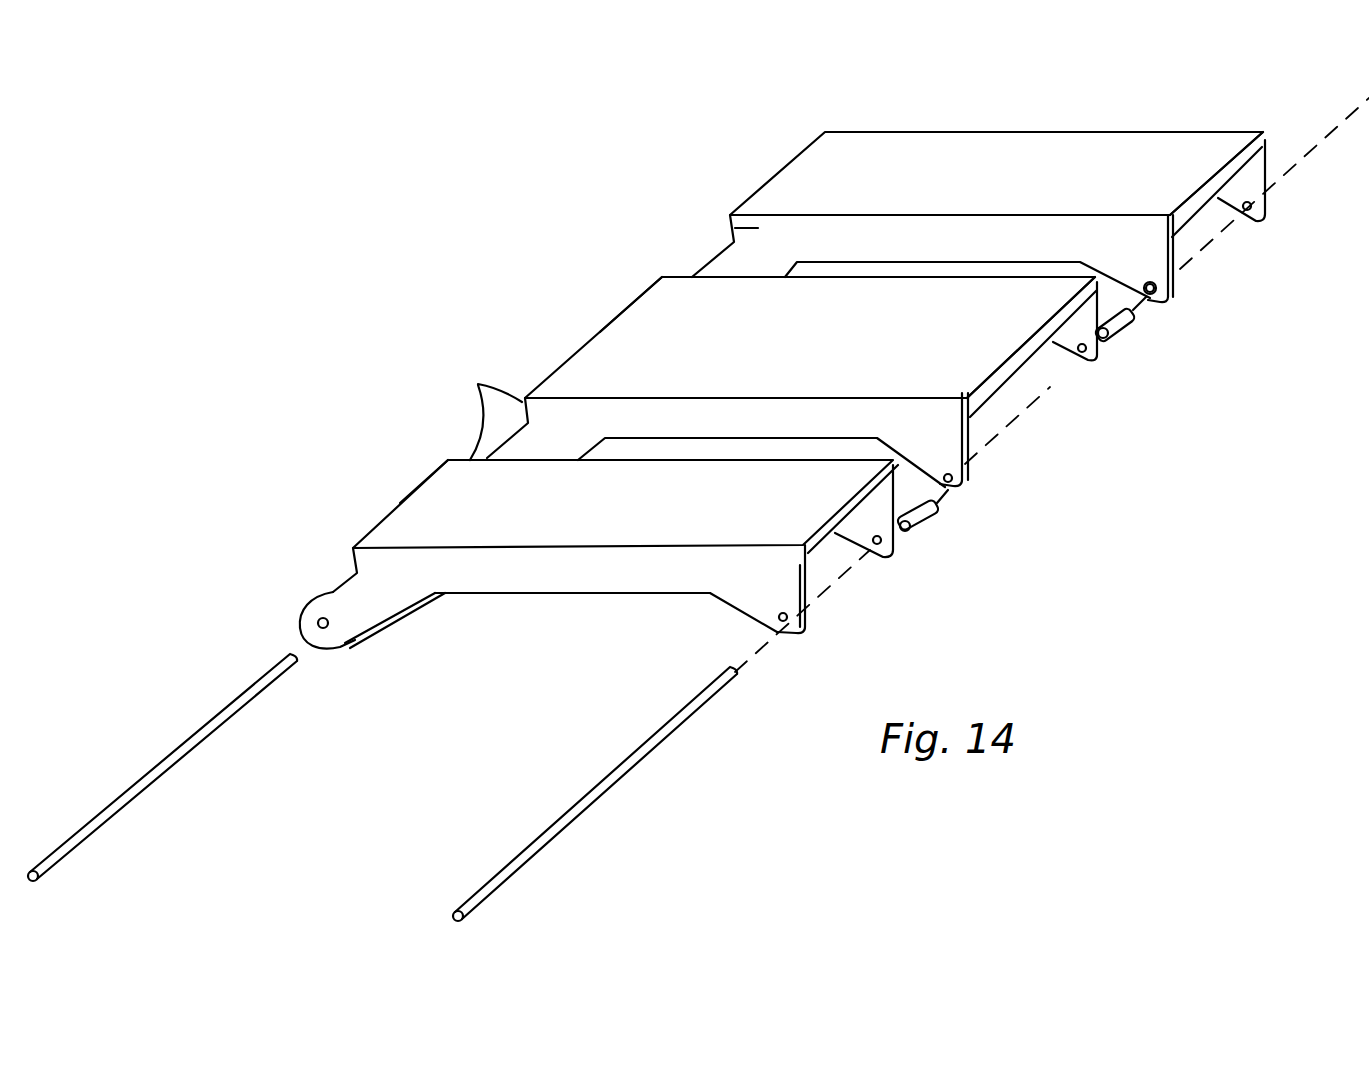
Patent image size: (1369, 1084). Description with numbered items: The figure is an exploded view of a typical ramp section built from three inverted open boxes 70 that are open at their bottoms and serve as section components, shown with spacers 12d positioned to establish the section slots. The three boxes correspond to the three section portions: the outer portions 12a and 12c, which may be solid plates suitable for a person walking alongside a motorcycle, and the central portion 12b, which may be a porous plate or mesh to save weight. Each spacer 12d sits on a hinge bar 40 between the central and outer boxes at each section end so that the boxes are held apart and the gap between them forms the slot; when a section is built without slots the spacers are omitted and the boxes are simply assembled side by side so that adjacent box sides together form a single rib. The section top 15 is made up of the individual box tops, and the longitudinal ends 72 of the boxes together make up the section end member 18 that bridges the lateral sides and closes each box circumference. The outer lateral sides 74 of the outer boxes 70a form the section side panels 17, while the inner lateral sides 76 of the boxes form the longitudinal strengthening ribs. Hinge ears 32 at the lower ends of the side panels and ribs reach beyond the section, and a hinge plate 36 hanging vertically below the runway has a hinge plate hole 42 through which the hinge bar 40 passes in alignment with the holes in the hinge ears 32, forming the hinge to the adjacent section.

The outer section portion 12a is at (420, 500).
The central section portion 12b is at (585, 350).
The outer section portion 12c is at (782, 178).
The spacer 12d is at (935, 525).
The section top 15 is at (985, 142).
The side panel 17 is at (731, 225).
The section end member 18 is at (832, 537).
The hinge ear 32 is at (338, 592).
The hinge plate 36 is at (785, 640).
The hinge bar 40 is at (210, 740).
The hinge plate hole 42 is at (1170, 300).
The box 70 is at (607, 580).
The outer box 70a is at (1132, 145).
The longitudinal end of box 72 is at (1260, 143).
The outer lateral side 74 is at (942, 133).
The inner lateral side 76 is at (485, 411).